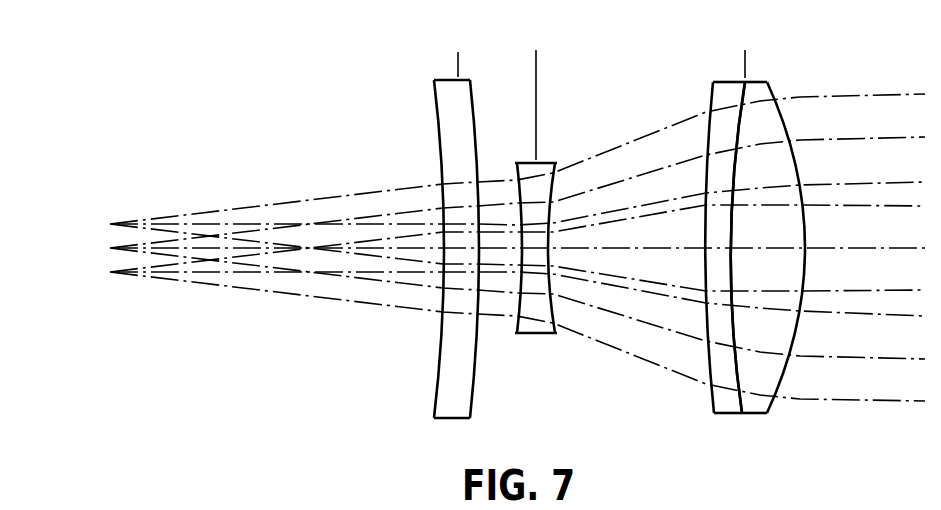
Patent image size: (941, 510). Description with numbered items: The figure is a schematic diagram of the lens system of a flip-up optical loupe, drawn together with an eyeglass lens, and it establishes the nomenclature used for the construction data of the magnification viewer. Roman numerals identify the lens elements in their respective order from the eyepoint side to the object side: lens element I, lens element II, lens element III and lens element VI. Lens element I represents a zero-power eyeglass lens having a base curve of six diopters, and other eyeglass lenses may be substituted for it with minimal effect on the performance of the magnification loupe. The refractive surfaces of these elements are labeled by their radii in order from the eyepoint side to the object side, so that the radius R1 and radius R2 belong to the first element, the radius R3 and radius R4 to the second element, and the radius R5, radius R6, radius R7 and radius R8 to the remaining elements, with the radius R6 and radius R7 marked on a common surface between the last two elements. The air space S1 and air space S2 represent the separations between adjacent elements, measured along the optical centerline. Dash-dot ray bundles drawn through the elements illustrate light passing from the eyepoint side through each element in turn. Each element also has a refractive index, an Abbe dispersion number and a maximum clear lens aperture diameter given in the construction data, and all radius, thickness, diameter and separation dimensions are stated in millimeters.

The radius of first refractive surface R1 is at (433, 193).
The radius of second refractive surface R2 is at (440, 431).
The radius of third refractive surface R3 is at (512, 241).
The radius of fourth refractive surface R4 is at (546, 350).
The radius of fifth refractive surface R5 is at (717, 167).
The radius of sixth refractive surface R6 is at (743, 183).
The radius of seventh refractive surface R7 is at (721, 431).
The radius of eighth refractive surface R8 is at (794, 264).
The air space S1 is at (536, 63).
The air space S2 is at (745, 63).
The lens element I is at (384, 266).
The lens element II is at (553, 239).
The lens element III is at (795, 250).
The lens element VI is at (727, 265).